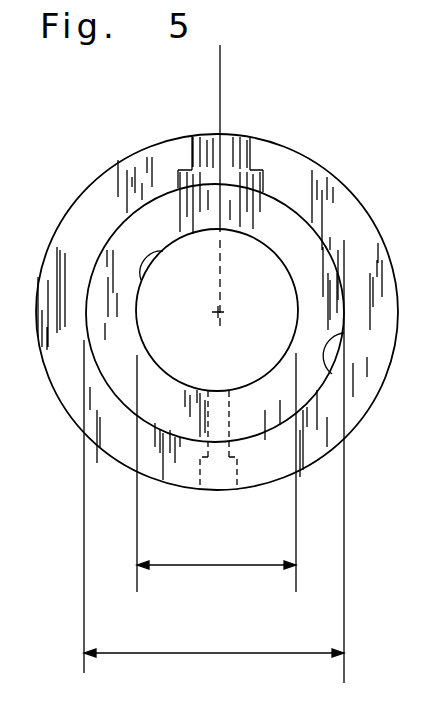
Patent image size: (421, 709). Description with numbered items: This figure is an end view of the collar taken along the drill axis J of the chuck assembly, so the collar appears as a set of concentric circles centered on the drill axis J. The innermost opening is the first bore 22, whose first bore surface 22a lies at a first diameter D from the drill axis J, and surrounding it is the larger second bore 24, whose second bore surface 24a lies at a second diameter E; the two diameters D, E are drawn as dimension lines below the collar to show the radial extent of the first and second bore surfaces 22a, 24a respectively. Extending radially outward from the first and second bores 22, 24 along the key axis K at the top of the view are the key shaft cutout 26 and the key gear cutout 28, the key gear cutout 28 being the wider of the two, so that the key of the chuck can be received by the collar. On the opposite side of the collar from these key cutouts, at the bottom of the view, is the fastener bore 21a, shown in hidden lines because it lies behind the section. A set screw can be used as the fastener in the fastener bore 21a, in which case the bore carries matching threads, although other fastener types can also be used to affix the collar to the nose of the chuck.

The fastener bore 21a is at (195, 433).
The first bore 22 is at (270, 278).
The first bore surface 22a is at (165, 253).
The second bore 24 is at (123, 345).
The second bore surface 24a is at (322, 357).
The key shaft cutout 26 is at (233, 148).
The key gear cutout 28 is at (243, 193).
The key axis K is at (220, 60).
The drill axis J is at (217, 313).
The first diameter D is at (216, 472).
The second diameter E is at (214, 461).